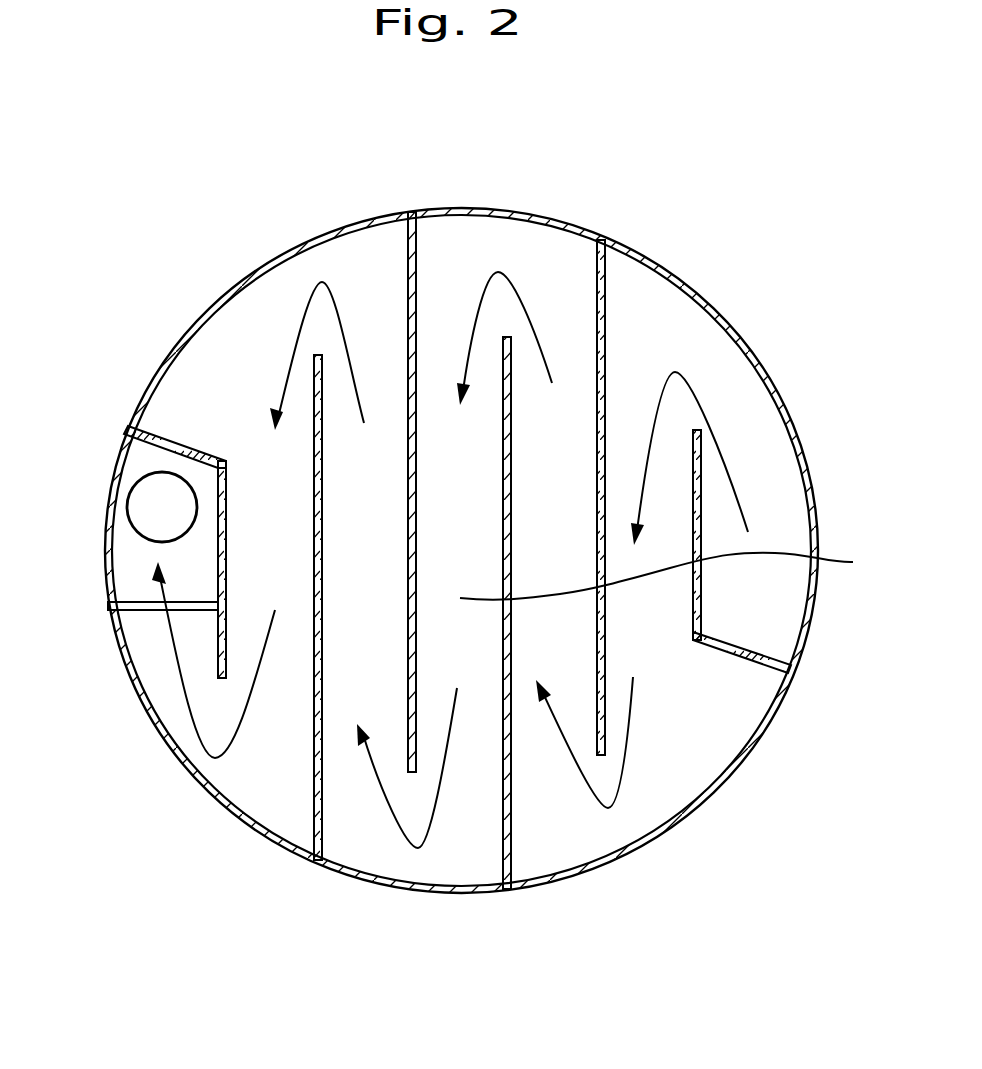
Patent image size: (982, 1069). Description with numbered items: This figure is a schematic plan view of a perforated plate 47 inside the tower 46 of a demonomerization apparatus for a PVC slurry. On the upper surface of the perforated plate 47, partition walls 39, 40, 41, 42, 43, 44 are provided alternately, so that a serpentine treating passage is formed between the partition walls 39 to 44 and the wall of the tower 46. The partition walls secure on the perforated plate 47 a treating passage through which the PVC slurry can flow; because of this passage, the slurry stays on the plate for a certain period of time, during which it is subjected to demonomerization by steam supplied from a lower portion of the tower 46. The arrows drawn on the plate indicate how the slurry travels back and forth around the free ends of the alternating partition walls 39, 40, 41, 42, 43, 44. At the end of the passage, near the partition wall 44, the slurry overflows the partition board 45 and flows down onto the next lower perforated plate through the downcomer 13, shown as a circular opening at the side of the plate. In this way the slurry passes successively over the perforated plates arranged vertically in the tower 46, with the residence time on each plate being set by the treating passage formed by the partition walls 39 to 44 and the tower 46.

The downcomer 13 is at (130, 492).
The partition wall 39 is at (693, 612).
The partition wall 40 is at (606, 360).
The partition wall 41 is at (512, 760).
The partition wall 42 is at (417, 297).
The partition wall 43 is at (323, 765).
The partition wall 44 is at (227, 527).
The partition board 45 is at (145, 617).
The tower 46 is at (793, 428).
The perforated plate 47 is at (678, 572).